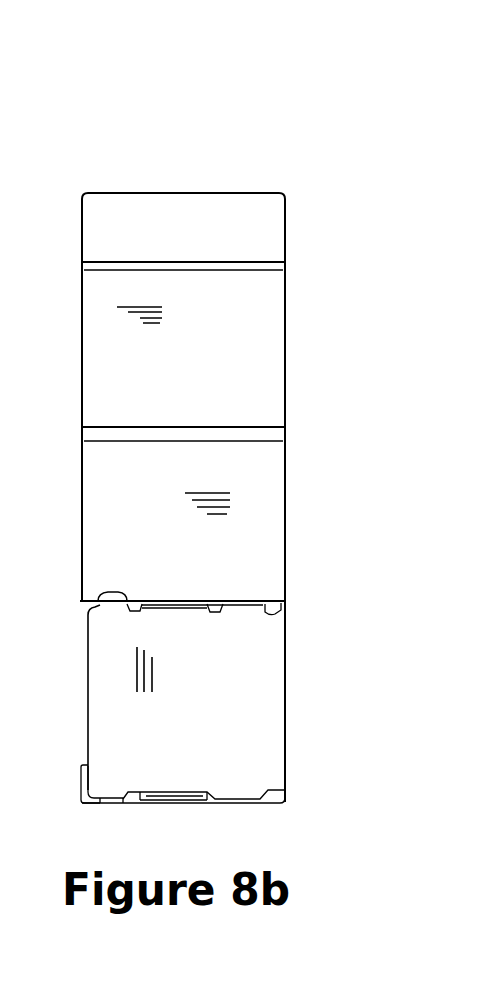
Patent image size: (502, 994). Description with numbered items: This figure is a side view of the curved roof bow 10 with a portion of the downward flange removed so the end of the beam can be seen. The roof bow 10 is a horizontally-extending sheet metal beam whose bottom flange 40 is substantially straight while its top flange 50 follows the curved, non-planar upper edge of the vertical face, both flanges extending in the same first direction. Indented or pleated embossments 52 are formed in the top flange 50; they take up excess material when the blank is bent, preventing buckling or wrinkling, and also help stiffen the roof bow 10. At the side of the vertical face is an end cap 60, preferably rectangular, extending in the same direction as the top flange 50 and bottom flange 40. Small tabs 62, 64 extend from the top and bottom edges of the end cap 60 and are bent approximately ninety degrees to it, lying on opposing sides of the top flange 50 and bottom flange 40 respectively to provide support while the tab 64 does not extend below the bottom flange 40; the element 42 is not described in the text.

The curved roof bow 10 is at (168, 168).
The bottom flange 40 is at (208, 803).
The base latch 42 is at (80, 777).
The top flange 50 is at (232, 393).
The indented embossments 52 is at (273, 268).
The end caps 60 is at (247, 643).
The small tab 62 is at (192, 612).
The small tab 64 is at (106, 599).